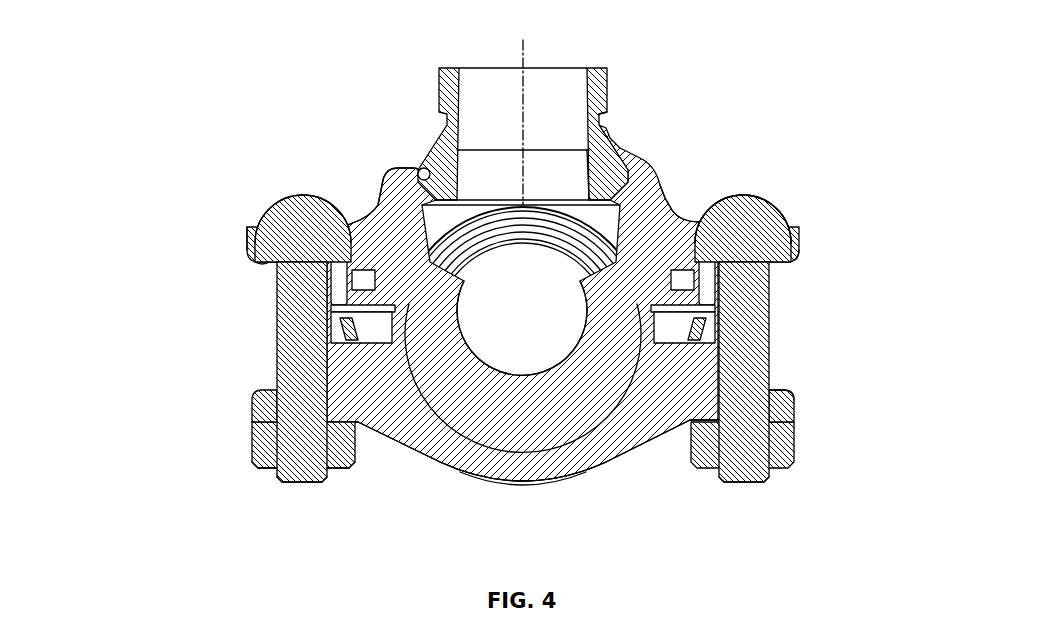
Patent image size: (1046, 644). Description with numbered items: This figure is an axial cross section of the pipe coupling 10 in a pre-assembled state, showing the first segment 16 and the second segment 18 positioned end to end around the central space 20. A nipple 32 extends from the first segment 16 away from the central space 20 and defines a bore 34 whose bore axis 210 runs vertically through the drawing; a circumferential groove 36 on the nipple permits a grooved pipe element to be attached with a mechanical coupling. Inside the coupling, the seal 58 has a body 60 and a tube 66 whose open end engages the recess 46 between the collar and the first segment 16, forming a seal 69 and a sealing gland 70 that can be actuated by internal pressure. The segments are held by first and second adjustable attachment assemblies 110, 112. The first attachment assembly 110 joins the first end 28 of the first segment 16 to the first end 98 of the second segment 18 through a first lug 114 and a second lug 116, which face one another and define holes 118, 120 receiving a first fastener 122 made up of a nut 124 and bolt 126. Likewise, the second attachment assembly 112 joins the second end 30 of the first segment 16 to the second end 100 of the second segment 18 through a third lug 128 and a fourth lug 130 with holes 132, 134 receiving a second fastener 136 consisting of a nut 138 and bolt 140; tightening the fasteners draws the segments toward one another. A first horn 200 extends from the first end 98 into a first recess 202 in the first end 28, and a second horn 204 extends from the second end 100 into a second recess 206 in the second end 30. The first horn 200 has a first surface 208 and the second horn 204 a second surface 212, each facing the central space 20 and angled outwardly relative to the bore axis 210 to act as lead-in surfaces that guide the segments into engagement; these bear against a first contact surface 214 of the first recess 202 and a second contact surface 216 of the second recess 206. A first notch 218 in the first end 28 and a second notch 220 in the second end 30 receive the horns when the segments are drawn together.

The coupling 10 is at (266, 62).
The first segment 16 is at (638, 160).
The second segment 18 is at (568, 463).
The central space 20 is at (537, 328).
The first end of first segment 28 is at (671, 207).
The second end of first segment 30 is at (364, 218).
The nipple 32 is at (606, 78).
The bore 34 is at (556, 80).
The circumferential groove 36 is at (602, 118).
The recess 46 is at (421, 168).
The seal 58 is at (503, 447).
The body 60 is at (523, 478).
The tube 66 is at (598, 270).
The seal 69 is at (590, 183).
The sealing gland 70 is at (402, 168).
The first end of second segment 98 is at (677, 442).
The second end of second segment 100 is at (375, 427).
The first attachment assembly 110 is at (872, 230).
The second attachment assembly 112 is at (104, 350).
The first lug 114 is at (797, 228).
The second lug 116 is at (793, 397).
The hole 118 is at (797, 245).
The hole 120 is at (770, 368).
The first fastener 122 is at (744, 475).
The nut 124 is at (788, 440).
The bolt 126 is at (758, 195).
The third lug 128 is at (258, 238).
The fourth lug 130 is at (258, 410).
The hole 132 is at (268, 262).
The hole 134 is at (258, 435).
The second fastener 136 is at (300, 483).
The nut 138 is at (258, 467).
The bolt 140 is at (287, 212).
The first horn 200 is at (683, 322).
The first recess 202 is at (682, 288).
The second horn 204 is at (346, 470).
The second recess 206 is at (357, 280).
The first surface 208 is at (620, 437).
The bore axis 210 is at (522, 48).
The second surface 212 is at (431, 443).
The first contact surface 214 is at (708, 238).
The second contact surface 216 is at (358, 277).
The first notch 218 is at (764, 232).
The second notch 220 is at (312, 280).